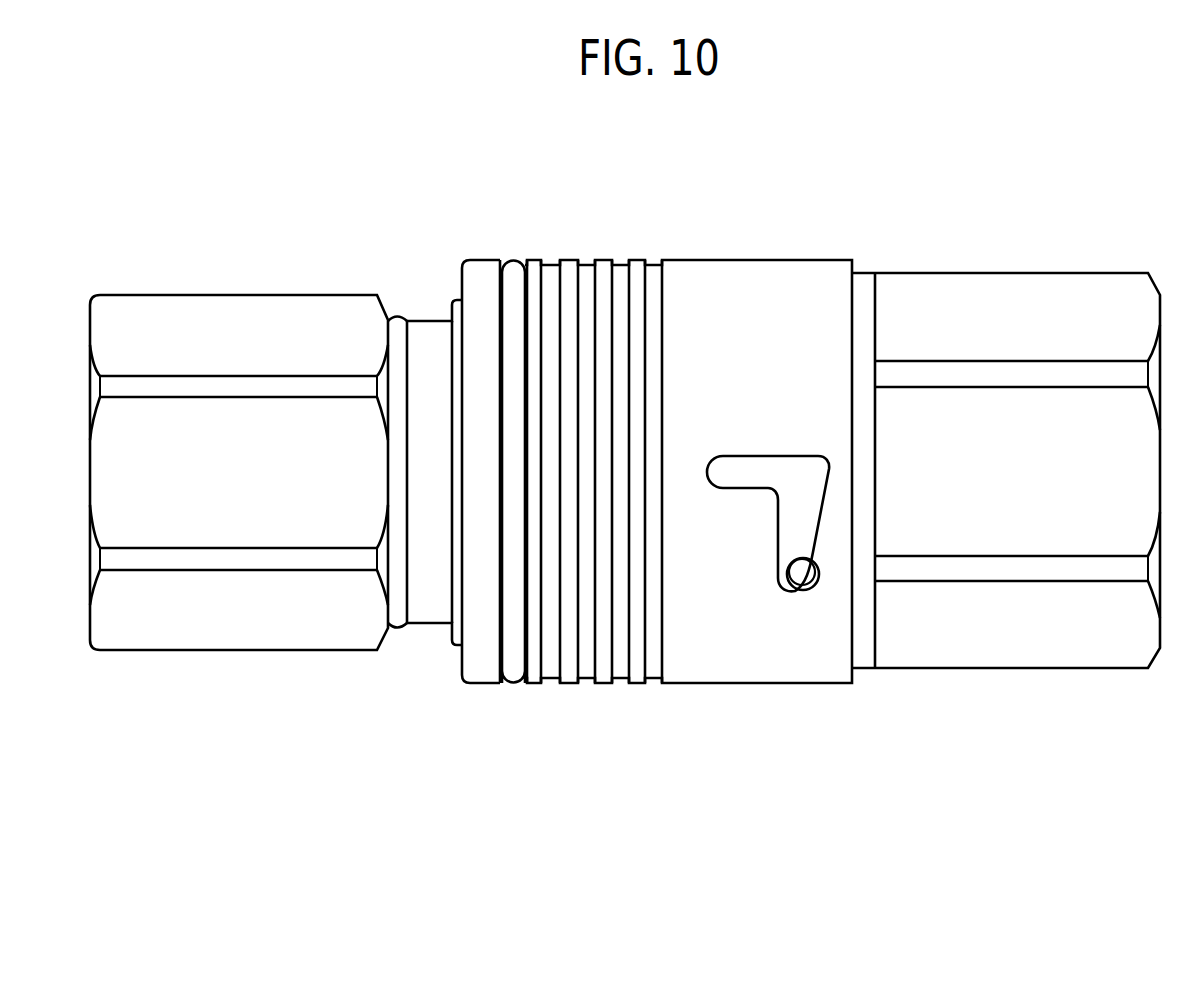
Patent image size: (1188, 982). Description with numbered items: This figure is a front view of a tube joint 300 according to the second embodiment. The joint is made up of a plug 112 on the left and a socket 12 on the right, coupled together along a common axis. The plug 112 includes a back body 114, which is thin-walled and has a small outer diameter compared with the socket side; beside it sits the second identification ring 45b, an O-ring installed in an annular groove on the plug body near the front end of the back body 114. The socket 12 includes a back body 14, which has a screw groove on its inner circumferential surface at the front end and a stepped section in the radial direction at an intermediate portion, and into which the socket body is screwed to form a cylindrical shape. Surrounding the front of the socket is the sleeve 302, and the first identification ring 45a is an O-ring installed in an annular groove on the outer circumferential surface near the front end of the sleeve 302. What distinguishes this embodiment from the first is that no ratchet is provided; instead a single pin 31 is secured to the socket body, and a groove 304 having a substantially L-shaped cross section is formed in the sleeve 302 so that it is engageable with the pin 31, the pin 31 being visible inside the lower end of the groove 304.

The tube joint 300 is at (784, 150).
The plug 112 is at (230, 208).
The back body 114 is at (195, 330).
The second identification ring 45b is at (400, 626).
The socket 12 is at (826, 205).
The sleeve 302 is at (691, 673).
The first identification ring 45a is at (515, 676).
The groove 304 is at (763, 463).
The pin 31 is at (801, 588).
The back body 14 is at (994, 310).